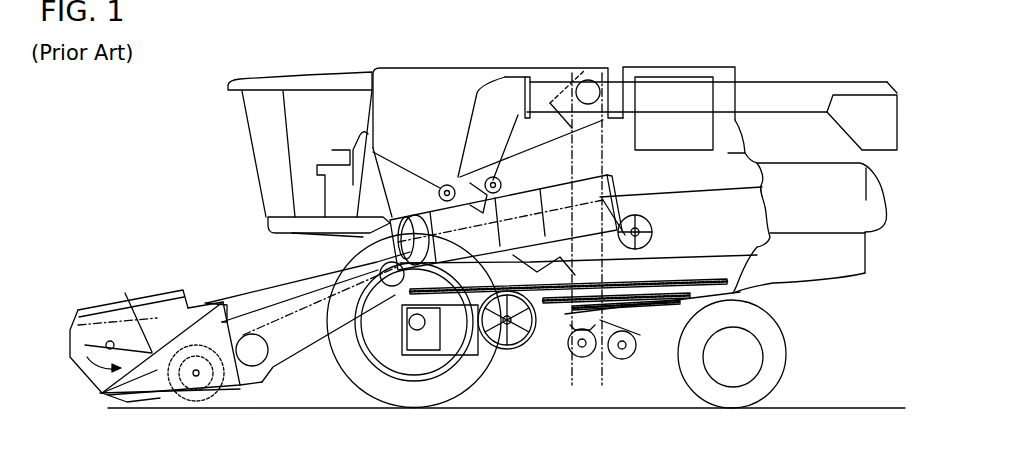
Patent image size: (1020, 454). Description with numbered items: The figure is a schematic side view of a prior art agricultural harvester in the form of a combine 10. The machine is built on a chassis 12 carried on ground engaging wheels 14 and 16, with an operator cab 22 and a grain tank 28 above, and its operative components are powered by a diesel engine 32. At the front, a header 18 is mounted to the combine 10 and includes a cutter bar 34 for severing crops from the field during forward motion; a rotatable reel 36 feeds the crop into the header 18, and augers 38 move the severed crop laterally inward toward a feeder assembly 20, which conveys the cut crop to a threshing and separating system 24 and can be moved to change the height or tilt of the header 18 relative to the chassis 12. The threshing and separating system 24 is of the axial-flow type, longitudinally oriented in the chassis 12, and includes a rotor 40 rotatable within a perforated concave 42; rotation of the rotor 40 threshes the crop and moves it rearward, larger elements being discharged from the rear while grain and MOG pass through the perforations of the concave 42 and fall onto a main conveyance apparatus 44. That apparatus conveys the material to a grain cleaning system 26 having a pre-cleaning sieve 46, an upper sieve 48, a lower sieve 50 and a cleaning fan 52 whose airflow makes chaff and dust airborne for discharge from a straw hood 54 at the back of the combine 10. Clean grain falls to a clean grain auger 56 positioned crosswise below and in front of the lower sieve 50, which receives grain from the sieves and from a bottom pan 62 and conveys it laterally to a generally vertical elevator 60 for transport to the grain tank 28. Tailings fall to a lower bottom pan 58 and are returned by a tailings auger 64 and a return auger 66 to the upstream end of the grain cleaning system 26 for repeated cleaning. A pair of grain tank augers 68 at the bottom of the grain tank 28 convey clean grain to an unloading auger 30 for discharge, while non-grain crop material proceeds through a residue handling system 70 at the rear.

The combine 10 is at (297, 65).
The chassis 12 is at (740, 293).
The ground engaging wheel 14 is at (353, 378).
The ground engaging wheel 16 is at (785, 368).
The header 18 is at (140, 292).
The feeder assembly 20 is at (277, 292).
The operator cab 22 is at (246, 140).
The threshing and separating system 24 is at (355, 248).
The grain cleaning system 26 is at (553, 363).
The grain tank 28 is at (402, 70).
The unloading auger 30 is at (792, 80).
The diesel engine 32 is at (665, 70).
The cutter bar 34 is at (162, 402).
The rotatable reel 36 is at (78, 335).
The augers 38 is at (195, 390).
The rotor 40 is at (408, 220).
The perforated concave 42 is at (535, 205).
The main conveyance apparatus 44 is at (403, 315).
The pre-cleaning sieve 46 is at (603, 291).
The upper sieve 48 is at (668, 293).
The lower sieve 50 is at (655, 310).
The cleaning fan 52 is at (510, 348).
The straw hood 54 is at (870, 195).
The clean grain auger 56 is at (585, 356).
The lower bottom pan 58 is at (693, 313).
The elevator 60 is at (603, 157).
The bottom pan 62 is at (685, 330).
The tailings auger 64 is at (622, 359).
The return auger 66 is at (565, 282).
The grain tank augers 68 is at (440, 185).
The residue handling system 70 is at (858, 290).